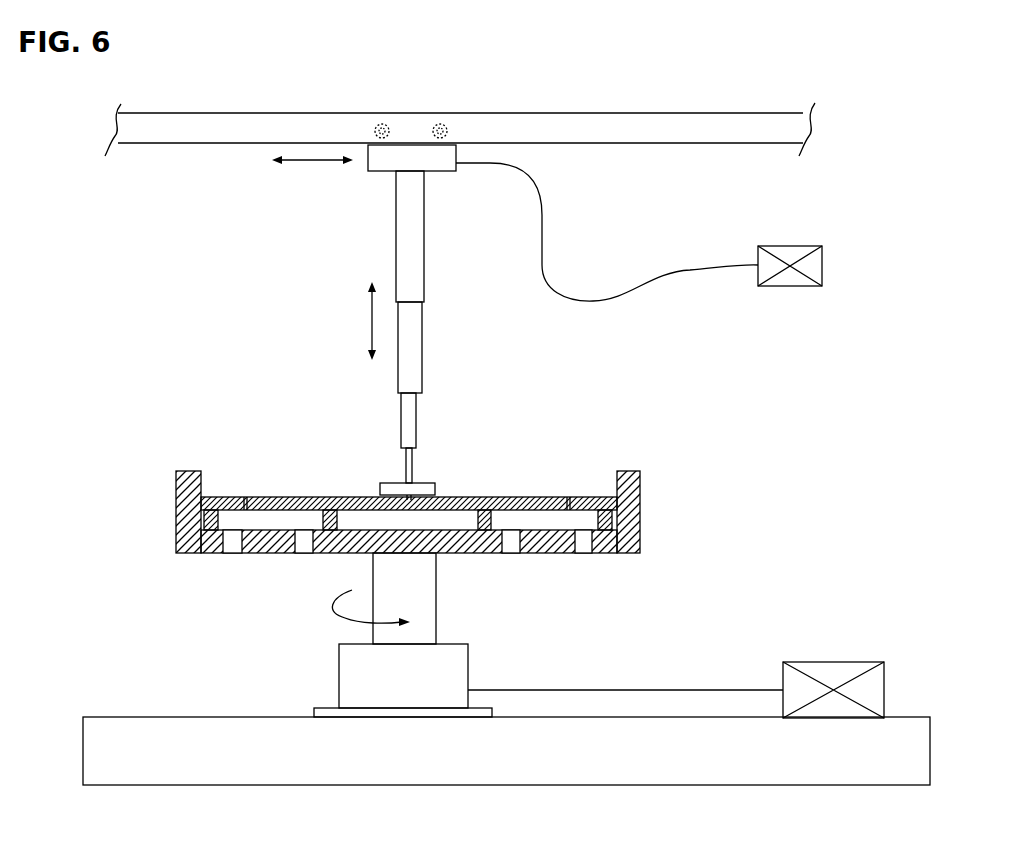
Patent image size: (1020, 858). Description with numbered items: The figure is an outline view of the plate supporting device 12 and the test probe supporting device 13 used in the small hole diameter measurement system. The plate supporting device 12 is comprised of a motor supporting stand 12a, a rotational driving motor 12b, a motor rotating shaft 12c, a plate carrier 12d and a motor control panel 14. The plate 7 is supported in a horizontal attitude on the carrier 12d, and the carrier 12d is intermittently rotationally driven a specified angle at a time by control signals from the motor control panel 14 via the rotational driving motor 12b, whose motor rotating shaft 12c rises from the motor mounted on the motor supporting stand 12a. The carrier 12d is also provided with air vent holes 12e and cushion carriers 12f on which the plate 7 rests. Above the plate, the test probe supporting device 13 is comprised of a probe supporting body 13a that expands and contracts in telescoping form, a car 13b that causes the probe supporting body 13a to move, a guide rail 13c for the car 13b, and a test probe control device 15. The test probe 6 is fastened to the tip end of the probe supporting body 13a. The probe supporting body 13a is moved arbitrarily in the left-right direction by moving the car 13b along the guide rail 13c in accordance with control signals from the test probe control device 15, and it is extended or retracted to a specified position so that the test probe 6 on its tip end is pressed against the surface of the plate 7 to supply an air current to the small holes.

The test probe 6 is at (428, 484).
The plate 7 is at (510, 497).
The plate supporting device 12 is at (506, 652).
The motor supporting stand 12a is at (443, 762).
The rotational driving motor 12b is at (358, 684).
The motor rotating shaft 12c is at (415, 598).
The plate carrier 12d is at (633, 508).
The air vent holes 12e is at (585, 548).
The cushion carriers 12f is at (328, 517).
The test probe supporting device 13 is at (368, 303).
The probe supporting body 13a is at (407, 225).
The car 13b is at (444, 165).
The guide rail 13c is at (633, 137).
The motor control panel 14 is at (830, 662).
The test probe control device 15 is at (822, 268).